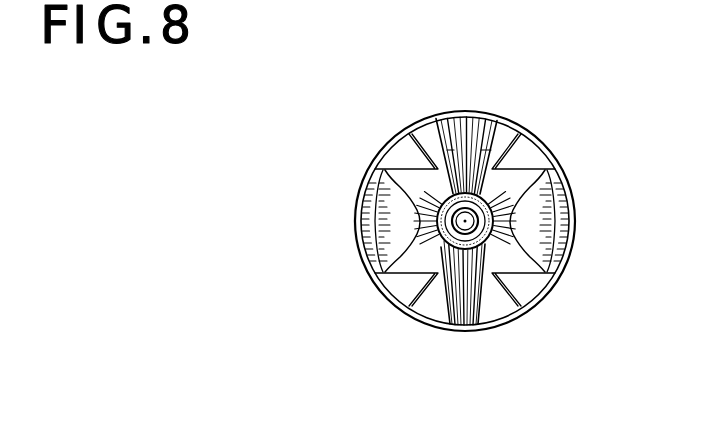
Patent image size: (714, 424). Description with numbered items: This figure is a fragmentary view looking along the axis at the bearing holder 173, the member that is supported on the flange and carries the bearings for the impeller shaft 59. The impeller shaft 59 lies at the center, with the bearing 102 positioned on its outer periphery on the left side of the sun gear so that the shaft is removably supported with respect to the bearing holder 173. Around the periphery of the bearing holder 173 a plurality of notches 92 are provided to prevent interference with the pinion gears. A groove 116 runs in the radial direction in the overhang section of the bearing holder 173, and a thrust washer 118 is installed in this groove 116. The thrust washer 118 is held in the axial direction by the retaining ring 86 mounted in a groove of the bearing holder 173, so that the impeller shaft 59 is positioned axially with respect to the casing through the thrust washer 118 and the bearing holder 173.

The impeller shaft 59 is at (503, 117).
The retaining ring 86 is at (362, 197).
The notches 92 is at (418, 150).
The bearing 102 is at (440, 172).
The groove 116 is at (533, 179).
The thrust washer 118 is at (388, 248).
The bearing holder 173 is at (481, 268).